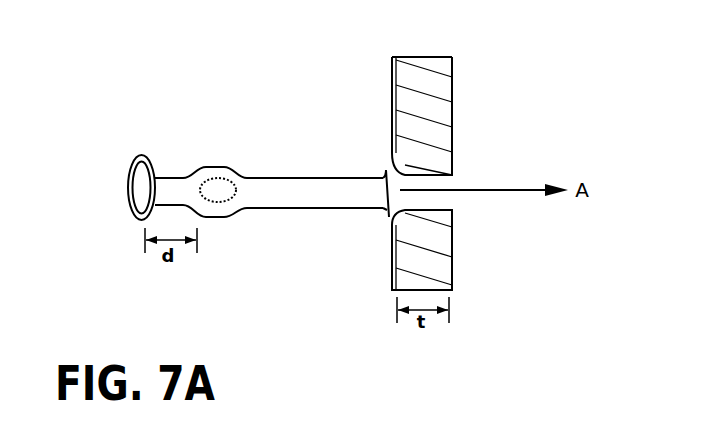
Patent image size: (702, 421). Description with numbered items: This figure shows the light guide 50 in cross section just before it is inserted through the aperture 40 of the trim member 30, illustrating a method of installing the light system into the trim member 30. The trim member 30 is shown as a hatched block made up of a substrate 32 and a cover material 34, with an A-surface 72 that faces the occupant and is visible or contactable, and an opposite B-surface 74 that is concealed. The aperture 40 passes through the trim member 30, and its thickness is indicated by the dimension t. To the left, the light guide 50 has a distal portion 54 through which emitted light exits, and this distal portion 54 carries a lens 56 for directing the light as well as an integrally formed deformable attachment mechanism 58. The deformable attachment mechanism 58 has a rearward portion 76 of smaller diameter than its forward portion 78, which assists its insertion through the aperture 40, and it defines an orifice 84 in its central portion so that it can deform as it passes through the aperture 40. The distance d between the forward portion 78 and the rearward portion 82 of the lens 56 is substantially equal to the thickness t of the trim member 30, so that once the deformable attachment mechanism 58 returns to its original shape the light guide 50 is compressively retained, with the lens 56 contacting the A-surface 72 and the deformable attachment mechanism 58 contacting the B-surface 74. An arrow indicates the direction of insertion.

The trim member 30 is at (460, 60).
The substrate 32 is at (453, 92).
The cover material 34 is at (392, 60).
The aperture 40 is at (392, 216).
The light guide 50 is at (322, 176).
The distal portion 54 is at (176, 172).
The lens 56 is at (127, 190).
The deformable attachment mechanism 58 is at (225, 214).
The A-surface 72 is at (392, 100).
The B-surface 74 is at (460, 147).
The rearward portion 76 is at (245, 170).
The forward portion 78 is at (188, 172).
The rearward portion 82 is at (163, 172).
The orifice 84 is at (232, 192).